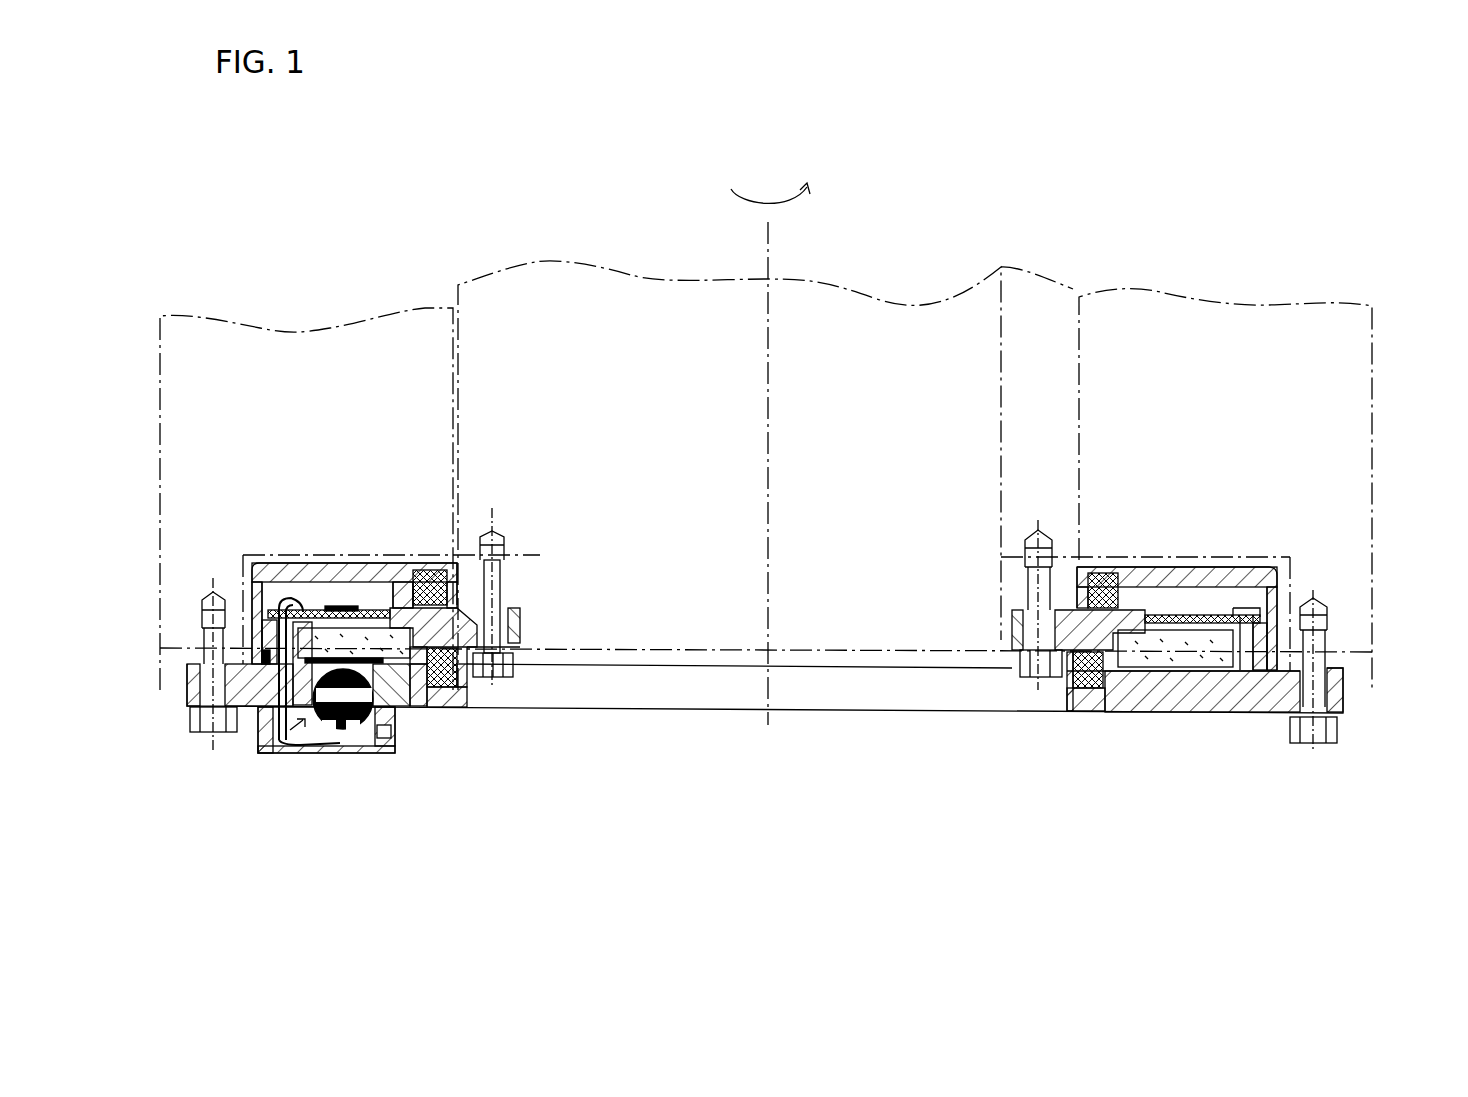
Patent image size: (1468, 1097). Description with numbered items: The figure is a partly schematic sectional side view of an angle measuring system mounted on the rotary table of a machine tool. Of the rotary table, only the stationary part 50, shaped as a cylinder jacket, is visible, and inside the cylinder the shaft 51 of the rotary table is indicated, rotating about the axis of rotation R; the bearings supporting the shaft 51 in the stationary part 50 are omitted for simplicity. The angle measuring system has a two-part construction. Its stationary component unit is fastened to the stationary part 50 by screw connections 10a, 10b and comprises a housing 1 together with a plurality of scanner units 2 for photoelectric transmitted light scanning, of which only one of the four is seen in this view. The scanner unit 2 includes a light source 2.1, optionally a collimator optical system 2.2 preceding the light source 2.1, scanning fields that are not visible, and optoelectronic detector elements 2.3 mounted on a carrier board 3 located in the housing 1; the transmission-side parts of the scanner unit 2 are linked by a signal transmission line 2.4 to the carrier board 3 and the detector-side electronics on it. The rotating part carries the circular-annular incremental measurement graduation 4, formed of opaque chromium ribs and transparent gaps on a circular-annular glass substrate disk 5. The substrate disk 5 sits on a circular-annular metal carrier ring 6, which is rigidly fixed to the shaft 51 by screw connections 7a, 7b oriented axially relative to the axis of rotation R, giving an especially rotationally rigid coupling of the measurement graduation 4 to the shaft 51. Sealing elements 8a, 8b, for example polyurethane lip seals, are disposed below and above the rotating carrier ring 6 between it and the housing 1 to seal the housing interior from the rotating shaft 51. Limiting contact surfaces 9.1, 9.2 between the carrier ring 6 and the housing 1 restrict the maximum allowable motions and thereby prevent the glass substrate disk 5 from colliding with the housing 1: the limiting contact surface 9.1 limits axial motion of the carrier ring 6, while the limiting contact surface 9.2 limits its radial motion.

The housing 1 is at (1247, 712).
The scanner unit 2 is at (290, 755).
The light source 2.1 is at (343, 753).
The collimator optical system 2.2 is at (367, 755).
The optoelectronic detector element 2.3 is at (335, 610).
The signal transmission line 2.4 is at (323, 755).
The carrier board 3 is at (300, 605).
The measurement graduation 4 is at (455, 605).
The glass substrate disk 5 is at (500, 607).
The carrier ring 6 is at (468, 650).
The screw connection 7a is at (505, 613).
The screw connection 7b is at (1032, 597).
The sealing element 8a is at (445, 686).
The sealing element 8b is at (432, 572).
The limiting contact surface 9.1 is at (390, 625).
The limiting contact surface 9.2 is at (418, 700).
The screw connection 10a is at (212, 727).
The screw connection 10b is at (1328, 653).
The stationary part 50 is at (1362, 345).
The shaft 51 is at (650, 332).
The axis of rotation R is at (768, 253).